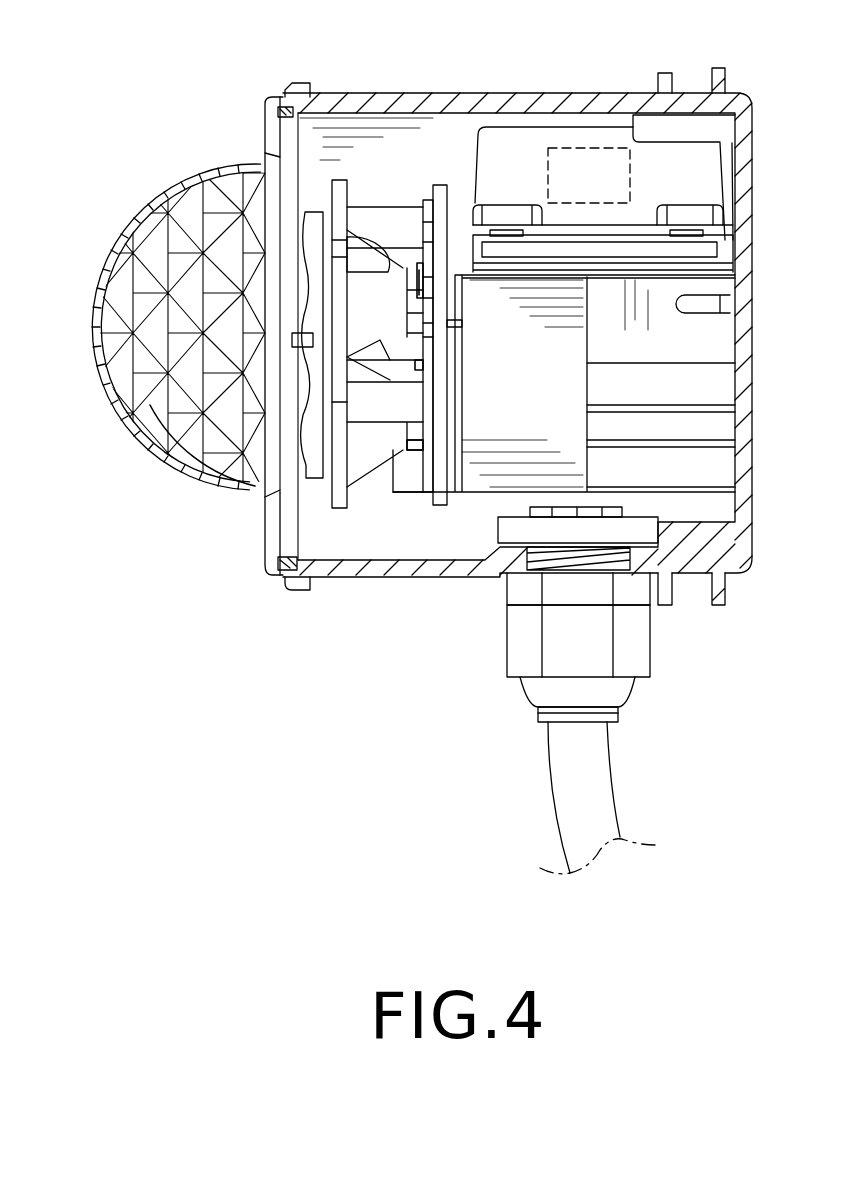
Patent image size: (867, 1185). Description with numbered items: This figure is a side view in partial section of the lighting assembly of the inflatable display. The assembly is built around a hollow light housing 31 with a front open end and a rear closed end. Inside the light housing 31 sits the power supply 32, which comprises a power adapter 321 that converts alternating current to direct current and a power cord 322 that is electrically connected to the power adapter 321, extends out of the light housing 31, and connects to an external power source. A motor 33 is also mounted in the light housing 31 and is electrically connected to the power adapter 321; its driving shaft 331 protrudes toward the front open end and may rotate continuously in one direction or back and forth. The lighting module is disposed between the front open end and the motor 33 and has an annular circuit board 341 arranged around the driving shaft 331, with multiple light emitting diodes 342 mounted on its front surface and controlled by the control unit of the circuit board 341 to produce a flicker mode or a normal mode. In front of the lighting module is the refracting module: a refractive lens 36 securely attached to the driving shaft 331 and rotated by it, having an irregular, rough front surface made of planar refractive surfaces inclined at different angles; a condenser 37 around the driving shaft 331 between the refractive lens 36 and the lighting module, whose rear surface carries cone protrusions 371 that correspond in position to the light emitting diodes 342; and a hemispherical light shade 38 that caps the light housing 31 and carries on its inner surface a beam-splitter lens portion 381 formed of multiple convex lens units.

The light housing 31 is at (452, 102).
The power supply 32 is at (565, 133).
The power adapter 321 is at (632, 183).
The power cord 322 is at (603, 798).
The motor 33 is at (480, 480).
The driving shaft 331 is at (388, 350).
The circuit board 341 is at (427, 203).
The light emitting diodes 342 is at (410, 290).
The refractive lens 36 is at (313, 473).
The condenser 37 is at (340, 507).
The cone protrusions 371 is at (390, 272).
The light shade 38 is at (197, 482).
The beam-splitter lens portion 381 is at (158, 403).